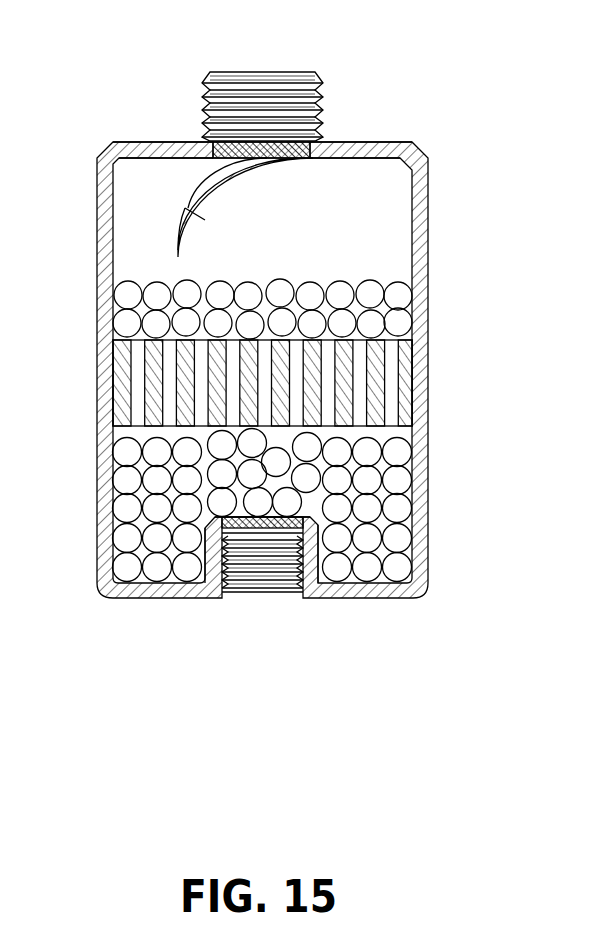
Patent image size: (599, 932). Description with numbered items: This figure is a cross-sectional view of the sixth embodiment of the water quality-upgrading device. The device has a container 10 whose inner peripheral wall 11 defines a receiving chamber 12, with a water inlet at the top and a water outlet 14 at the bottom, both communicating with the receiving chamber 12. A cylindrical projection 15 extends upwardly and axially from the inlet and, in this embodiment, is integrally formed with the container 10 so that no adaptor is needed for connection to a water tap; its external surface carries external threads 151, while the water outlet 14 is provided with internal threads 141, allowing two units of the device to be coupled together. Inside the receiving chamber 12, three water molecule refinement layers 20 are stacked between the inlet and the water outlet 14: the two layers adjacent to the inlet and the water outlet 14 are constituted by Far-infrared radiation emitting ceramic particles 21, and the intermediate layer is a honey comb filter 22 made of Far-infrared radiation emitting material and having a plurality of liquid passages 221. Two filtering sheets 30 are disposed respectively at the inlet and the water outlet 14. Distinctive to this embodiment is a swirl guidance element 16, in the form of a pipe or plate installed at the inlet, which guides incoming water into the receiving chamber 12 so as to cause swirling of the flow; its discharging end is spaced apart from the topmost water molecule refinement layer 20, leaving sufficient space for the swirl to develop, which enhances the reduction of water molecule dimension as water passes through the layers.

The container 10 is at (100, 146).
The inner peripheral wall 11 is at (415, 260).
The receiving chamber 12 is at (380, 170).
The water outlet 14 is at (310, 545).
The internal threads 141 is at (250, 593).
The cylindrical projection 15 is at (290, 72).
The external threads 151 is at (322, 95).
The swirl guidance element 16 is at (185, 208).
The water molecule refinement layers 20 is at (413, 351).
The Far-infrared radiation emitting ceramic particles 21 is at (415, 450).
The honey comb filter 22 is at (415, 375).
The liquid passages 221 is at (415, 407).
The filtering sheets 30 is at (217, 158).